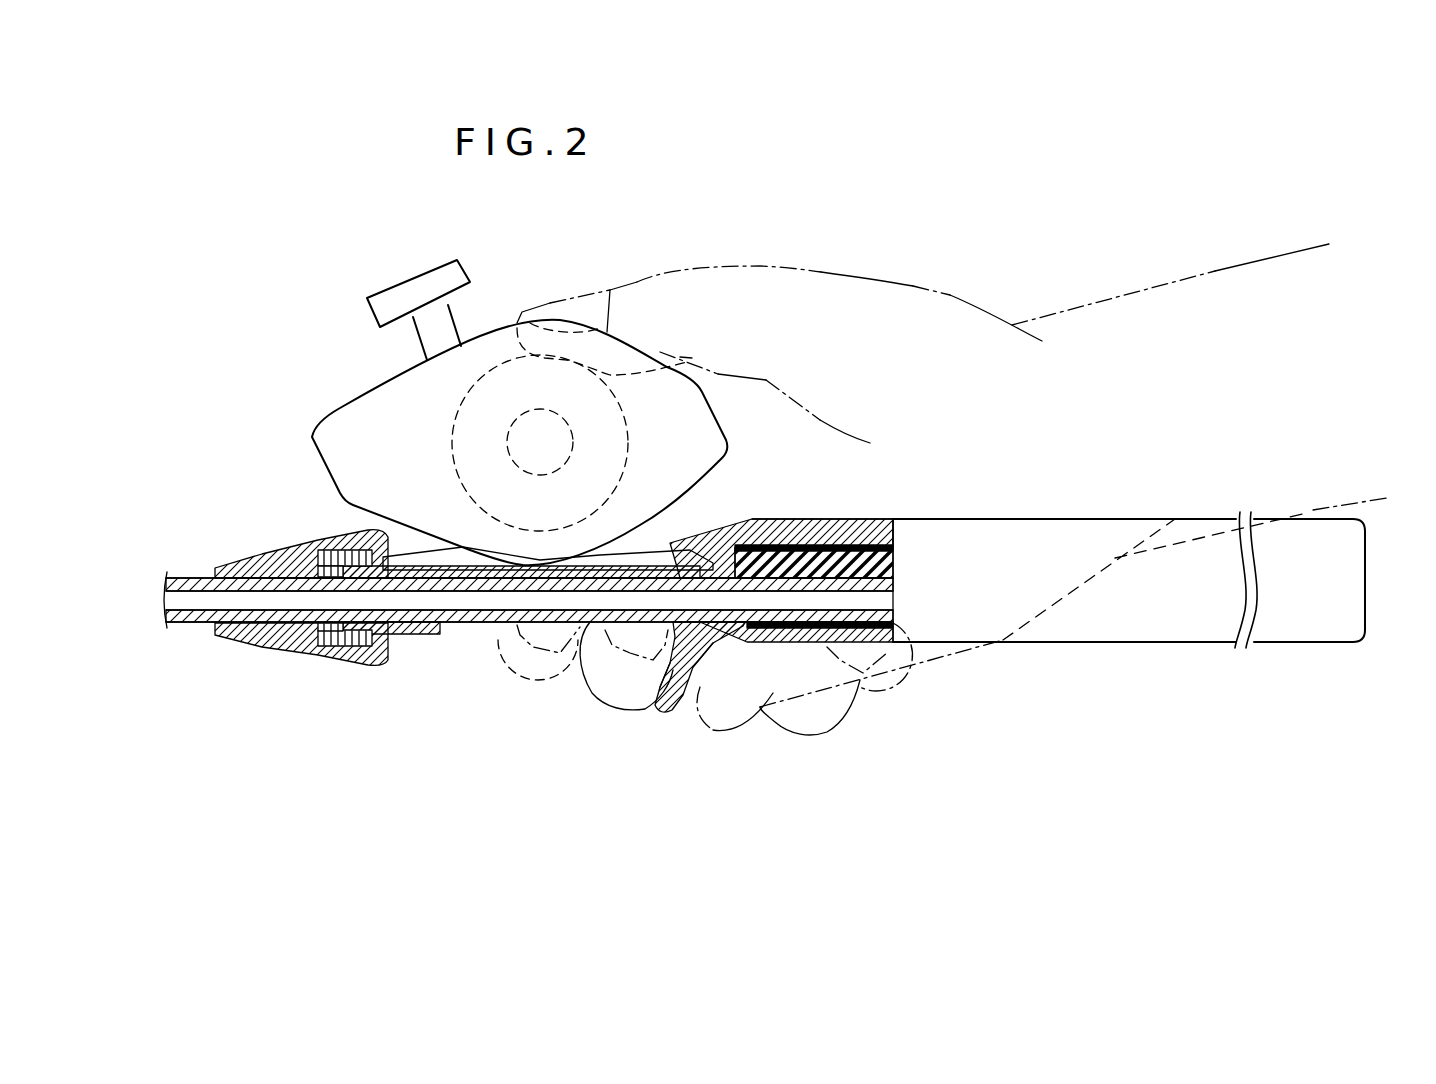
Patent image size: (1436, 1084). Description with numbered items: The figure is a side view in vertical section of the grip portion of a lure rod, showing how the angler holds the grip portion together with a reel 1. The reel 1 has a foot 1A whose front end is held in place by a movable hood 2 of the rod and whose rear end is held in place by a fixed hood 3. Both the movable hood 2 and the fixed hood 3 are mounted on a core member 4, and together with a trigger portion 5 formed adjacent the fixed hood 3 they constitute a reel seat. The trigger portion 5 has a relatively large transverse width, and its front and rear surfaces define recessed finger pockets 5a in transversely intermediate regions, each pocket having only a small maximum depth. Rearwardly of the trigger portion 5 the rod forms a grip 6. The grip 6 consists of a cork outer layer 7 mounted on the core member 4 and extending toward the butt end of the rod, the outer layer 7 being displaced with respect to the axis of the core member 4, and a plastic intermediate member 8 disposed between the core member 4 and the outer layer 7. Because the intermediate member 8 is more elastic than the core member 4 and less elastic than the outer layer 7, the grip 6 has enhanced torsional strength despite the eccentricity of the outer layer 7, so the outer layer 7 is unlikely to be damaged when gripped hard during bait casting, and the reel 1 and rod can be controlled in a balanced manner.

The reel 1 is at (360, 395).
The foot 1A is at (467, 558).
The movable hood 2 is at (308, 540).
The fixed hood 3 is at (722, 521).
The core member 4 is at (860, 555).
The trigger portion 5 is at (663, 713).
The finger pockets 5a is at (669, 671).
The grip 6 is at (1120, 645).
The outer layer 7 is at (882, 519).
The intermediate member 8 is at (893, 558).